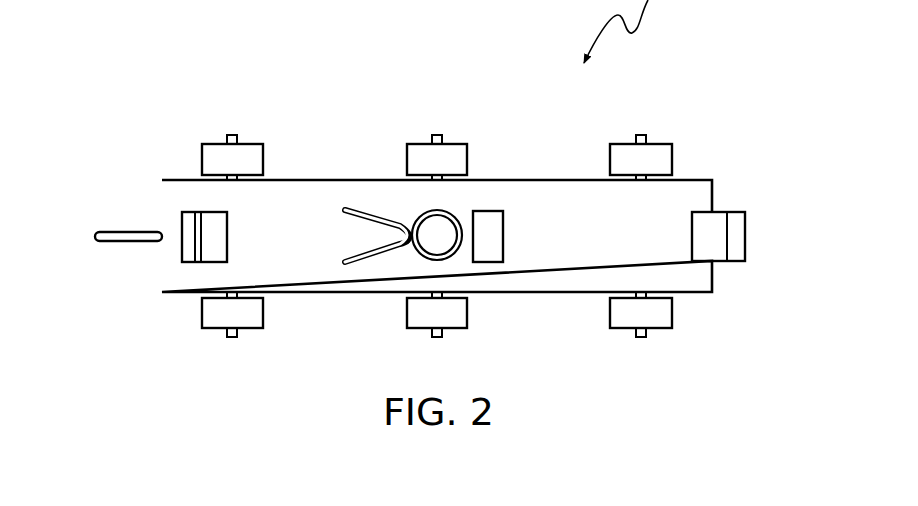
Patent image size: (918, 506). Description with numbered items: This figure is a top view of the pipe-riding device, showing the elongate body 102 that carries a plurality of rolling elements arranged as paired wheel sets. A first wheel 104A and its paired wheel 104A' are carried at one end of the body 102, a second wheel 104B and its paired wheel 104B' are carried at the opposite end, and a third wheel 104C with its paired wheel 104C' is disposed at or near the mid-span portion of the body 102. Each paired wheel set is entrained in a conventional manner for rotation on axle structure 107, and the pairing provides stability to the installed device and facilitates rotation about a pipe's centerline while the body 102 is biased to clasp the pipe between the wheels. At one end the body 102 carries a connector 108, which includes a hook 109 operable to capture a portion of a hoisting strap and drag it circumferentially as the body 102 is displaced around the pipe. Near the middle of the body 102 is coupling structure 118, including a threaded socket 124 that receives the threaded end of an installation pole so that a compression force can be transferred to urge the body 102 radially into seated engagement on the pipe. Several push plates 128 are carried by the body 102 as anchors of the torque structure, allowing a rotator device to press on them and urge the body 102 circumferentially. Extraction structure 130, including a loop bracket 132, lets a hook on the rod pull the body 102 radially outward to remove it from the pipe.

The body 102 is at (695, 276).
The first wheel 104A is at (624, 335).
The paired wheel of first wheel set 104A' is at (679, 132).
The second wheel 104B is at (187, 317).
The paired wheel of second wheel set 104B' is at (266, 128).
The third wheel 104C is at (422, 335).
The paired wheel of third wheel set 104C' is at (468, 131).
The axle structure 107 is at (231, 135).
The connector 108 is at (91, 198).
The hook 109 is at (120, 238).
The coupling structure 118 is at (404, 275).
The threaded socket 124 is at (443, 243).
The push plate 128 is at (187, 226).
The extraction structure 130 is at (329, 242).
The loop bracket 132 is at (378, 218).